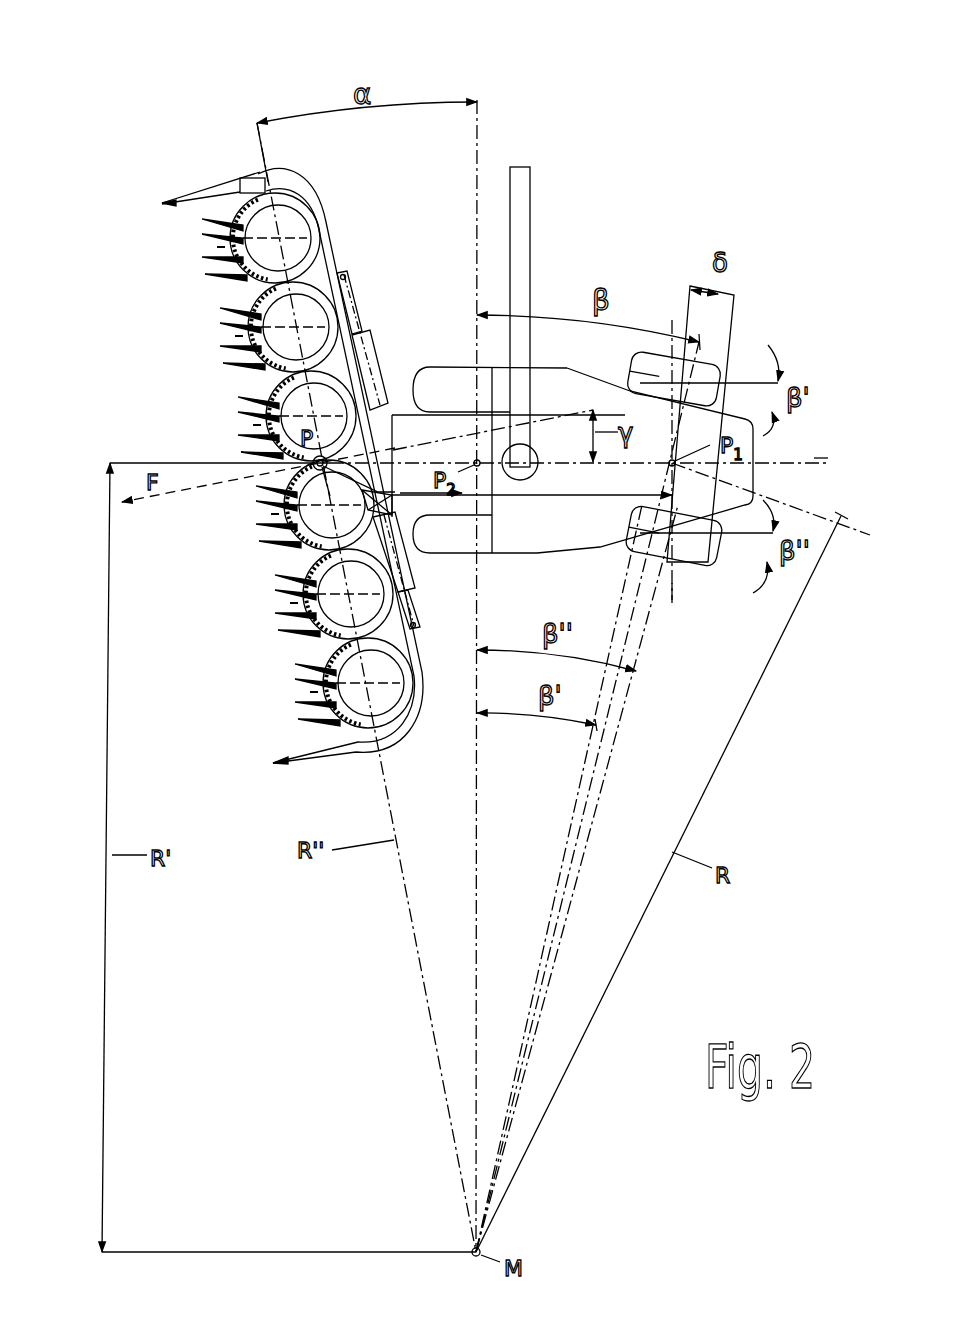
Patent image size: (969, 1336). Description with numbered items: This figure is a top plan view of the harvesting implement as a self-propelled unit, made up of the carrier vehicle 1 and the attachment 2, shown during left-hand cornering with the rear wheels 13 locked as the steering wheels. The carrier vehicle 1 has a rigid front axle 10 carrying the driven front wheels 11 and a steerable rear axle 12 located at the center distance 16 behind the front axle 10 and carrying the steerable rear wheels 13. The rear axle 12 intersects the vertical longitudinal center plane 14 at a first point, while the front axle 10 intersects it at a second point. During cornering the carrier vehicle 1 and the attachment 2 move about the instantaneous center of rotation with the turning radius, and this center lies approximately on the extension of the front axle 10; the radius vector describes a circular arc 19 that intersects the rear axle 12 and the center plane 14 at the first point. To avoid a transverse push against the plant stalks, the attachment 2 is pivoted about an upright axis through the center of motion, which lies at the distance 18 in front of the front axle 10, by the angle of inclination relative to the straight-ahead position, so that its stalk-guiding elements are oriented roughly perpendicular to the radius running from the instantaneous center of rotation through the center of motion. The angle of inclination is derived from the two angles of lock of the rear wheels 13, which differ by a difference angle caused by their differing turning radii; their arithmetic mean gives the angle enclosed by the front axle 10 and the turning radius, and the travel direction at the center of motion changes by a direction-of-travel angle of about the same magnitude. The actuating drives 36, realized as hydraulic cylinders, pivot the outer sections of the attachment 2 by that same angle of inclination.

The carrier vehicle 1 is at (570, 273).
The attachment 2 is at (318, 83).
The front axle 10 is at (482, 572).
The front wheels 11 is at (426, 367).
The rear axle 12 is at (676, 598).
The rear wheels 13 is at (701, 378).
The vertical longitudinal center plane 14 is at (823, 455).
The center distance 16 is at (568, 495).
The distance 18 is at (390, 506).
The circular arc 19 is at (836, 510).
The actuating drives 36 is at (368, 340).